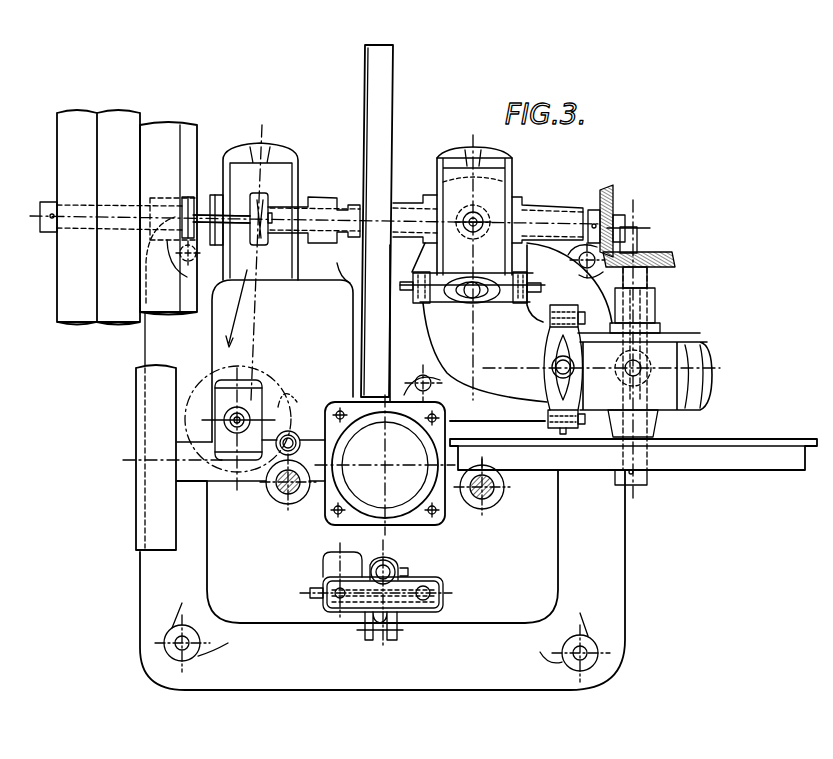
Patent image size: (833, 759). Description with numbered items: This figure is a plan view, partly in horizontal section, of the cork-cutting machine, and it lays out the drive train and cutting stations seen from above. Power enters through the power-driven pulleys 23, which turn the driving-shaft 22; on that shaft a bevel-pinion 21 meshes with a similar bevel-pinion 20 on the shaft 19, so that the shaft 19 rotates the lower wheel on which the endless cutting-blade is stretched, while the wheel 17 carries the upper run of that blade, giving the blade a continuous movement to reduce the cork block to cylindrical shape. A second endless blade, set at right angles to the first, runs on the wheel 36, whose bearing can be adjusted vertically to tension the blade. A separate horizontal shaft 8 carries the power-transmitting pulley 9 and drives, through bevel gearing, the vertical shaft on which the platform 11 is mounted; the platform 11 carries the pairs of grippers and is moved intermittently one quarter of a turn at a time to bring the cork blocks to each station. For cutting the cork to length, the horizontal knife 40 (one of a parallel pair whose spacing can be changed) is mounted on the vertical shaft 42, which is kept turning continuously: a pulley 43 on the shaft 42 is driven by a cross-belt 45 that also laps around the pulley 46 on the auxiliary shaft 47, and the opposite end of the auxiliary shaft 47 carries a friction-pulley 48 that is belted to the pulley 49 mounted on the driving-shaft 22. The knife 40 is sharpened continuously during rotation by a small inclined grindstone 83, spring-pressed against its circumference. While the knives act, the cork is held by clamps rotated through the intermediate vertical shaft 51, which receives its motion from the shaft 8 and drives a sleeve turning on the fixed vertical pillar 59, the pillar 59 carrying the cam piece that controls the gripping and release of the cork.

The horizontal shaft 8 is at (203, 452).
The power-transmitting pulley 9 is at (156, 431).
The platform 11 is at (414, 440).
The wheel 17 is at (716, 463).
The shaft 19 is at (647, 288).
The bevel-pinion 20 is at (668, 262).
The bevel-pinion 21 is at (615, 208).
The driving-shaft 22 is at (46, 230).
The power-driven pulleys 23 is at (98, 217).
The wheel 36 is at (386, 128).
The horizontal knife 40 is at (211, 377).
The vertical shaft 42 is at (238, 430).
The pulley 43 is at (253, 419).
The cross-belt 45 is at (260, 343).
The pulley 46 is at (263, 210).
The auxiliary shaft 47 is at (225, 217).
The friction-pulley 48 is at (193, 205).
The pulley 49 is at (192, 153).
The intermediate vertical shaft 51 is at (305, 426).
The fixed vertical pillar 59 is at (284, 493).
The inclined grindstone 83 is at (292, 399).